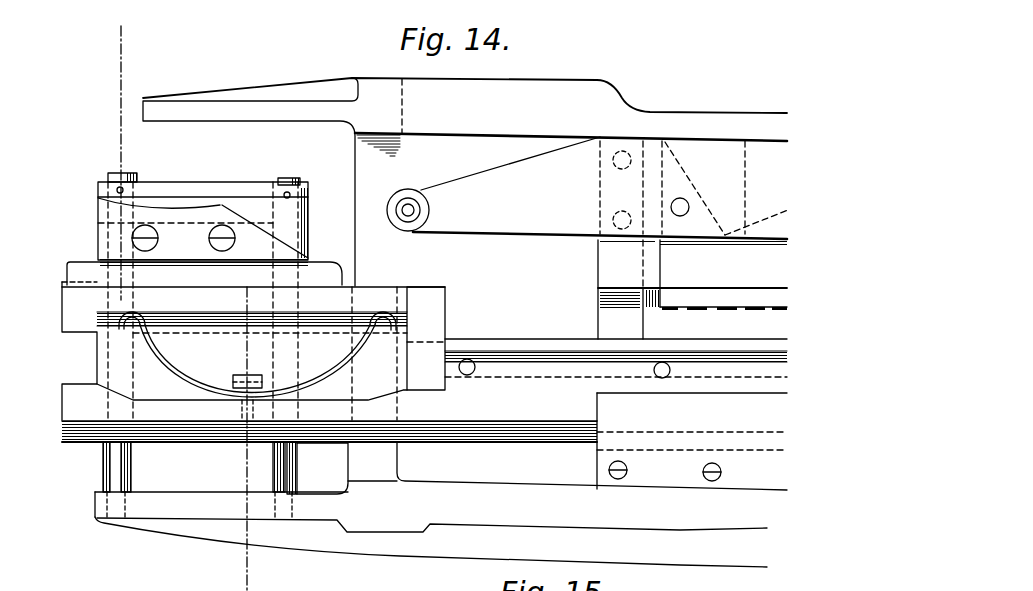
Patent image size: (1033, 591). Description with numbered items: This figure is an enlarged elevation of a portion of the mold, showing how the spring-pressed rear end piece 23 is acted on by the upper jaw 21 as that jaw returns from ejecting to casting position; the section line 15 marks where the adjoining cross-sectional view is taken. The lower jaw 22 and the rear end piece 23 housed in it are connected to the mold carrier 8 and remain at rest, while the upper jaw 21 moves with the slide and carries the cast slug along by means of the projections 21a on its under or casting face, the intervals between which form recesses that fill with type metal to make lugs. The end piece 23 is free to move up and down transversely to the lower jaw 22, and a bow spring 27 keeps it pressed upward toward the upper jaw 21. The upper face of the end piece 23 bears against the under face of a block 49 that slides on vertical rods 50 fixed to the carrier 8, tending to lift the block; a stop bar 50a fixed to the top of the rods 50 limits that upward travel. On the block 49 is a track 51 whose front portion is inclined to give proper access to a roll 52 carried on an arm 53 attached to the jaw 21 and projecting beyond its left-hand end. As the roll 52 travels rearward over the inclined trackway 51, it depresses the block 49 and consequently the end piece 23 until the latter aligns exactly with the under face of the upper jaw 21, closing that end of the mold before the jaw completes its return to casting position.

The mold carrier 8 is at (520, 92).
The section line 15— 15 is at (160, 23).
The upper jaw 21 is at (677, 290).
The projections 21a is at (718, 309).
The lower jaw 22 is at (532, 337).
The rear end piece 23 is at (72, 312).
The bow spring 27 is at (182, 368).
The block 49 is at (68, 266).
The vertical rods 50 is at (110, 459).
The stop bar 50a is at (193, 190).
The track 51 is at (212, 208).
The roll 52 is at (415, 228).
The arm 53 is at (553, 236).